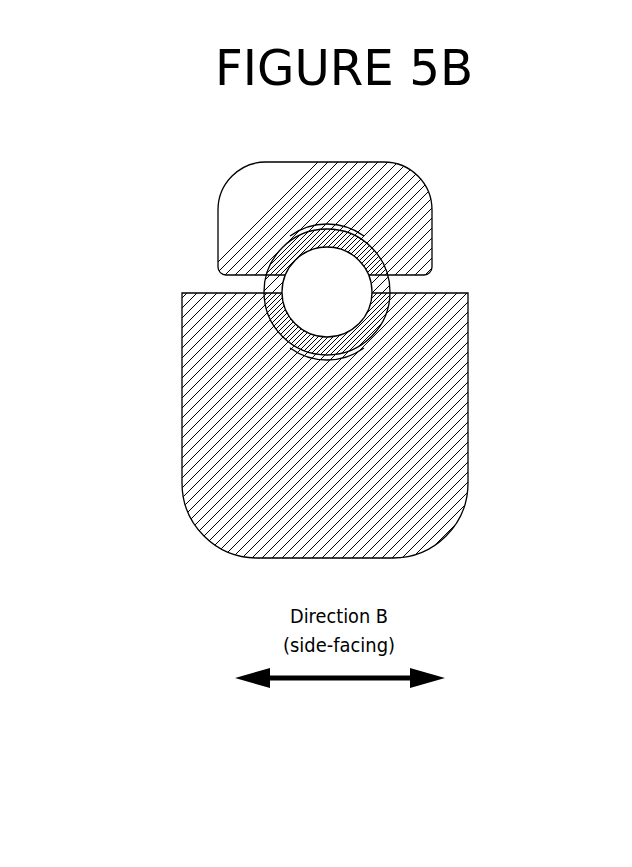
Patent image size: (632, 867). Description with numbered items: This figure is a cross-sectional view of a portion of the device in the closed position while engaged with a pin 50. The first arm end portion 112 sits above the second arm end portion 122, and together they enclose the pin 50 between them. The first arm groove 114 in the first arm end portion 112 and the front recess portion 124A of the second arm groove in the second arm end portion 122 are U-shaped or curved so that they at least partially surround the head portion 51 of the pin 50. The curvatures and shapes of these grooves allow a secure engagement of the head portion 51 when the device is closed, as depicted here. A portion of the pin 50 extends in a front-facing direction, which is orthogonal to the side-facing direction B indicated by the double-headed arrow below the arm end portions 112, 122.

The first arm end portion 112 is at (208, 189).
The first arm groove 114 is at (330, 240).
The front recess portion 124A is at (329, 346).
The second arm end portion 122 is at (483, 489).
The head portion 51 is at (402, 283).
The pin 50 is at (331, 305).